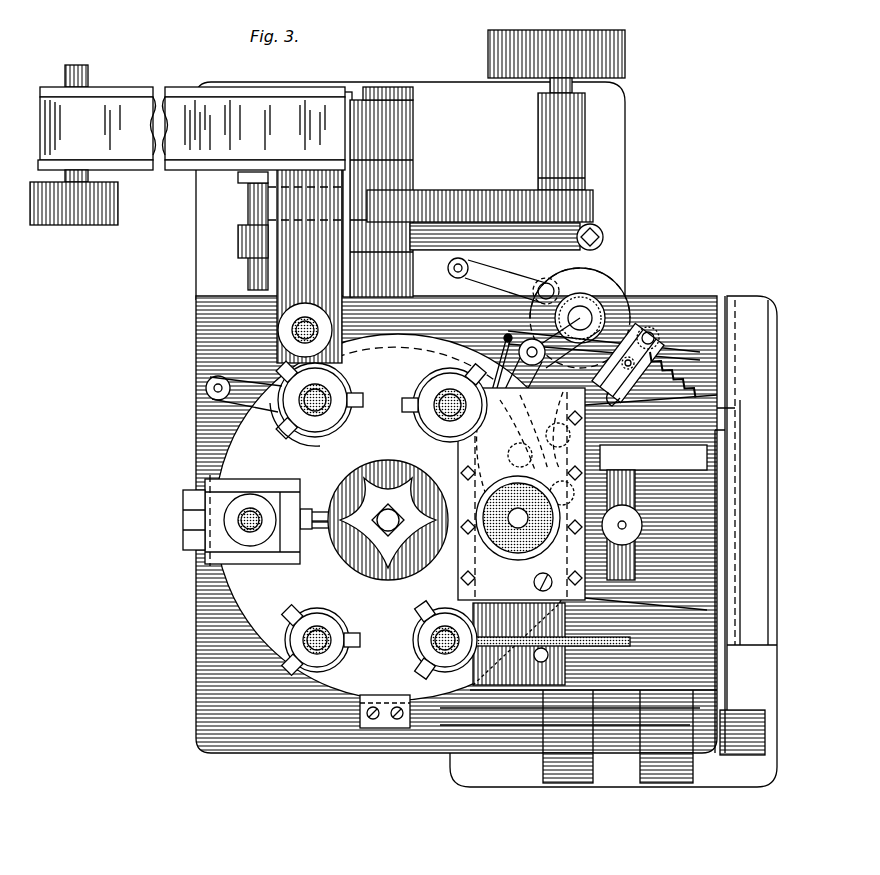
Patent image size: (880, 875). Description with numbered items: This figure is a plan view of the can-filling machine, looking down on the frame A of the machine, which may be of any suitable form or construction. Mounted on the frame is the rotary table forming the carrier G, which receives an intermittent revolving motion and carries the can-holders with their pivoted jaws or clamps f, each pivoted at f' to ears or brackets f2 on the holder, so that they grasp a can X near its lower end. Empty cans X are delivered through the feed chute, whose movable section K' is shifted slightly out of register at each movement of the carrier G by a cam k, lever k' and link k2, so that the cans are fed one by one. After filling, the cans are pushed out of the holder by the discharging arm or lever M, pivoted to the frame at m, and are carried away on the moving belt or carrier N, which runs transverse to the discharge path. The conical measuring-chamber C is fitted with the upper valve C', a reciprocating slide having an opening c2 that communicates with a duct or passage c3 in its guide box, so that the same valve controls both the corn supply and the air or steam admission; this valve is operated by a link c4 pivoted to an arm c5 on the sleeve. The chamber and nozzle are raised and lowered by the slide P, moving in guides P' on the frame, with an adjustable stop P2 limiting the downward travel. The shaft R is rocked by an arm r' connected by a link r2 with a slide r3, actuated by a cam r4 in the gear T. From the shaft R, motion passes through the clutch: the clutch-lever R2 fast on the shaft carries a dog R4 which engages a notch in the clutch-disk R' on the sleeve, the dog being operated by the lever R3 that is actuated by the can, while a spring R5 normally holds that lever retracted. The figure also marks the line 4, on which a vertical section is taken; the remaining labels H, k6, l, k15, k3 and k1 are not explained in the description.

The frame A is at (456, 524).
The lower frame H is at (545, 640).
The slide P is at (736, 524).
The guides P' is at (752, 472).
The adjustable stop P2 is at (640, 520).
The carrier G is at (398, 517).
The dashed arc path k6 is at (417, 356).
The column l is at (300, 273).
The stop block k15 is at (252, 176).
The cans X is at (293, 464).
The moving belt or carrier N is at (187, 145).
The gear T is at (492, 197).
The cam r4 is at (432, 215).
The link r2 is at (505, 281).
The slide r3 is at (449, 262).
The arm r' is at (547, 277).
The shaft R is at (593, 314).
The clutch-disk R' is at (611, 266).
The pivot pin k3 is at (602, 342).
The lever k' is at (490, 362).
The arm c5 is at (550, 360).
The link c4 is at (525, 386).
The clutch-lever R2 is at (655, 358).
The dog R4 is at (618, 362).
The spring R5 is at (690, 392).
The lever R3 is at (608, 394).
The measuring-chamber C is at (582, 499).
The opening c2 is at (518, 518).
The duct or passage c3 is at (536, 582).
The valve C' is at (519, 644).
The link k2 is at (345, 528).
The cam k is at (416, 561).
The shaft k1 is at (352, 540).
The jaws or clamps f is at (381, 401).
The pivot f' is at (379, 522).
The ears or brackets f2 is at (372, 388).
The pivot m is at (212, 393).
The discharging arm or lever M is at (285, 422).
The movable section K' is at (224, 520).
The section line 4 is at (205, 520).